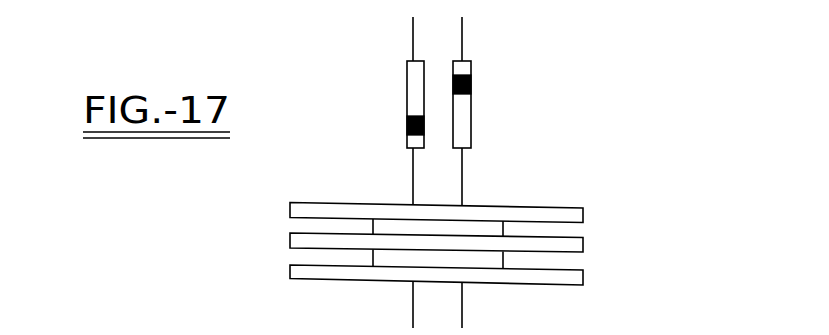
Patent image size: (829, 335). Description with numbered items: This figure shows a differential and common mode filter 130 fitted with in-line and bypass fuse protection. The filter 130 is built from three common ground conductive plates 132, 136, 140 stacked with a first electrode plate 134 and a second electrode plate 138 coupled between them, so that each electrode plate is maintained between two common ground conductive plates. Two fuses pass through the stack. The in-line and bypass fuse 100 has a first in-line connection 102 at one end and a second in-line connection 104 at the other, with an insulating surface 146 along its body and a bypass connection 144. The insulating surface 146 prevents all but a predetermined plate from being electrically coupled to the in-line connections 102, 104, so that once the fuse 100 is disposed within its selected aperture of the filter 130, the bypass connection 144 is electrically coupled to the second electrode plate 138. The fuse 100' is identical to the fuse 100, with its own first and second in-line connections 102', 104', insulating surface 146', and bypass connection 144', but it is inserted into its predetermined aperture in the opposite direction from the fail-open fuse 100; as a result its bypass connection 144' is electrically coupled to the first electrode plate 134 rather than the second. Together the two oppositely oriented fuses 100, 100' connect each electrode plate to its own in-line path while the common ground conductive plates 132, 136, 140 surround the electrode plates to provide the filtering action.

The in-line and bypass fuse 100 is at (355, 111).
The in-line and bypass fuse 100' is at (510, 111).
The first in-line connection 102 is at (370, 37).
The first in-line connection 102' is at (504, 37).
The second in-line connection 104 is at (371, 304).
The second in-line connection 104' is at (503, 305).
The differential and common mode filter 130 is at (264, 226).
The common ground conductive plate 132 is at (557, 208).
The first electrode plate 134 is at (495, 230).
The common ground conductive plate 136 is at (580, 246).
The second electrode plate 138 is at (497, 261).
The common ground conductive plate 140 is at (557, 283).
The bypass connection 144 is at (375, 124).
The bypass connection 144' is at (500, 79).
The insulating surface 146 is at (375, 101).
The insulating surface 146' is at (500, 104).